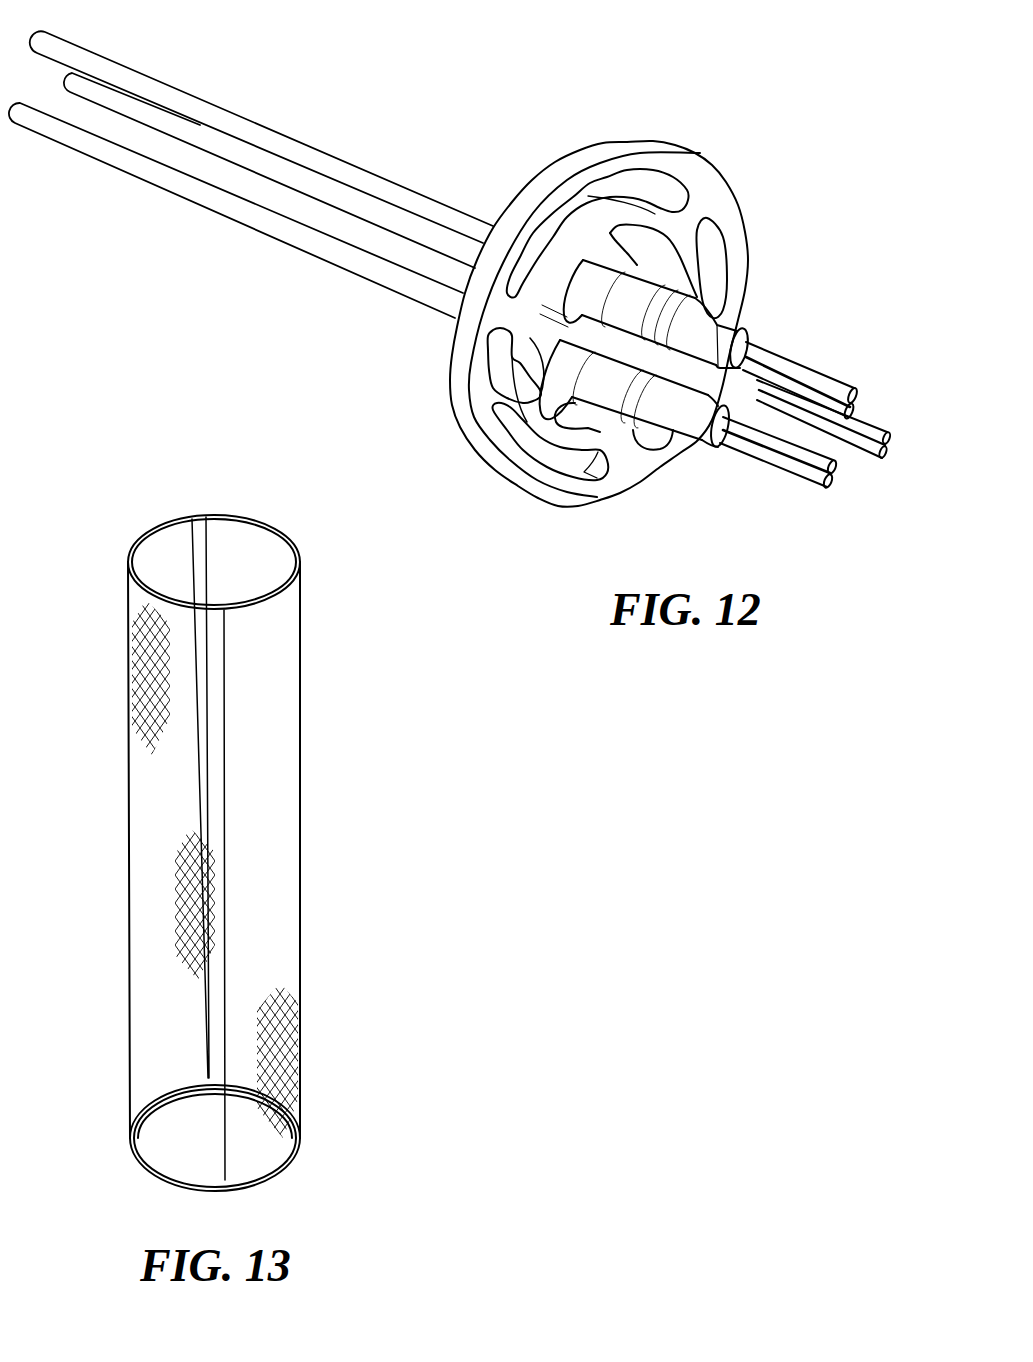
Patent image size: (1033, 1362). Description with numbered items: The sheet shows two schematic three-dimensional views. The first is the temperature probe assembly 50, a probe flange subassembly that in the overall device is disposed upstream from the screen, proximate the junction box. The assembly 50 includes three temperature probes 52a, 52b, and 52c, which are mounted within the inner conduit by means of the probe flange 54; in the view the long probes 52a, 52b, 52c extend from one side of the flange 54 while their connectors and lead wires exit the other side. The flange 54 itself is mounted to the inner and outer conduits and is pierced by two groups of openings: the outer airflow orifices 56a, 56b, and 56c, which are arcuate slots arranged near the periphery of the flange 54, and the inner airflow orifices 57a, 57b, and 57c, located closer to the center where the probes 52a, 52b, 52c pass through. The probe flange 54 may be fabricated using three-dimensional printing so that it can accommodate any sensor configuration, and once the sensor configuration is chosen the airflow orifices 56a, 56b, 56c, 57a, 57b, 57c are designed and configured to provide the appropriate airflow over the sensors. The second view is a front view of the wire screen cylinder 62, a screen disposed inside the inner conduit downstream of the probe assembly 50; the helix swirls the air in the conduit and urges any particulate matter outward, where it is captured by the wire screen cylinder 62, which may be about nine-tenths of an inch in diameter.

In FIG. 12, the temperature probe assembly 50 is at (423, 146).
In FIG. 12, the temperature probe 52a is at (162, 85).
In FIG. 12, the temperature probe 52b is at (135, 163).
In FIG. 12, the temperature probe 52c is at (227, 143).
In FIG. 12, the probe flange 54 is at (659, 142).
In FIG. 12, the outer airflow orifice 56a is at (662, 186).
In FIG. 12, the outer airflow orifice 56b is at (547, 462).
In FIG. 12, the outer airflow orifice 56c is at (717, 285).
In FIG. 12, the inner airflow orifice 57a is at (653, 252).
In FIG. 12, the inner airflow orifice 57b is at (590, 420).
In FIG. 12, the inner airflow orifice 57c is at (540, 342).
In FIG. 13, the wire screen cylinder 62 is at (288, 854).